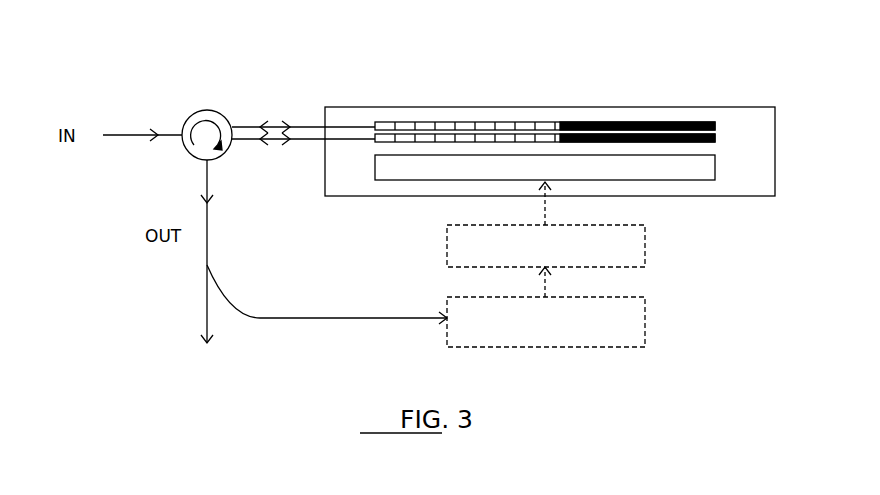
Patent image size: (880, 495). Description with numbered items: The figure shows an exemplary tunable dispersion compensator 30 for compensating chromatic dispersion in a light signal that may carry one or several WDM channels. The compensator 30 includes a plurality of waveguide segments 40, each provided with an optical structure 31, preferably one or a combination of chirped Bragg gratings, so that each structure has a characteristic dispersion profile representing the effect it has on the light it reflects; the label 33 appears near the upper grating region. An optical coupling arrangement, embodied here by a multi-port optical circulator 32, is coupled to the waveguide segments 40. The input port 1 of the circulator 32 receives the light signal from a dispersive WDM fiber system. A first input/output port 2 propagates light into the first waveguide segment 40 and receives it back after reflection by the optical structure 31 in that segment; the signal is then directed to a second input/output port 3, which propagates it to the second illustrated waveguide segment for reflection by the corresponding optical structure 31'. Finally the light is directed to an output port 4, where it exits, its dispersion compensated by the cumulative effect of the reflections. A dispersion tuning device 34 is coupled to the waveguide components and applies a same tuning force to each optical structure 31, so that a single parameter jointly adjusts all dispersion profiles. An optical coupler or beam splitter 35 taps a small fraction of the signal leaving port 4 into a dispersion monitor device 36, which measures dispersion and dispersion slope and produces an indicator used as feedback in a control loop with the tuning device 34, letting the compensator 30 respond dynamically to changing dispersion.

The input port 1 is at (180, 124).
The first input/output port 2 is at (236, 122).
The second input/output port 3 is at (236, 144).
The output port 4 is at (213, 160).
The tunable dispersion compensator 30 is at (360, 55).
The optical structure 31 is at (545, 107).
The optical structure of second waveguide segment 31' is at (622, 107).
The multi-port optical circulator 32 is at (212, 110).
The chirped fibre grating 33 is at (358, 108).
The dispersion tuning device 34 is at (646, 244).
The optical coupler or beam splitter 35 is at (208, 262).
The dispersion monitor device 36 is at (646, 318).
The waveguide segment 40 is at (360, 160).